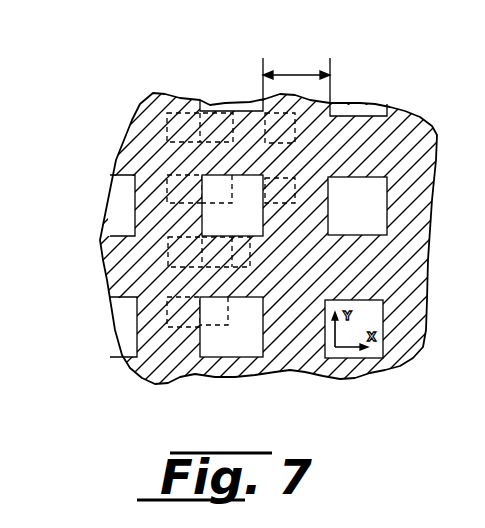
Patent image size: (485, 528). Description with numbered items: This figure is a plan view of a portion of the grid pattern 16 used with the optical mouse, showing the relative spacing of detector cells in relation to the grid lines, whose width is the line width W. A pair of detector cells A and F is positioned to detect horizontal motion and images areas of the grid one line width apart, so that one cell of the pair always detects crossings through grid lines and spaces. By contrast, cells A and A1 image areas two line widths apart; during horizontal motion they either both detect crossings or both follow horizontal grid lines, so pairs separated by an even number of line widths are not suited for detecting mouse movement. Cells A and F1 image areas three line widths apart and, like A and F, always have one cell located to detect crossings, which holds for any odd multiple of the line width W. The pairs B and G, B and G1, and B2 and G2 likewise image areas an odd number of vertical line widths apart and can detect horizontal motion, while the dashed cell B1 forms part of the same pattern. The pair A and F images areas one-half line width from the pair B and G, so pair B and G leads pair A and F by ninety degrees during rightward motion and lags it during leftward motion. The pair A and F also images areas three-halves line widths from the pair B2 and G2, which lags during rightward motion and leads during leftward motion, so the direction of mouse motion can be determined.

The substrate body 16 is at (113, 138).
The detector cell A is at (167, 124).
The detector cell B is at (218, 111).
The line width W is at (296, 74).
The detector cell B2 is at (323, 126).
The detector cell F is at (170, 178).
The detector cell G is at (211, 204).
The detector cell G2 is at (293, 197).
The detector cell A1 is at (168, 252).
The lower dashed block B1 is at (250, 258).
The detector cell F1 is at (167, 317).
The detector cell G1 is at (208, 327).